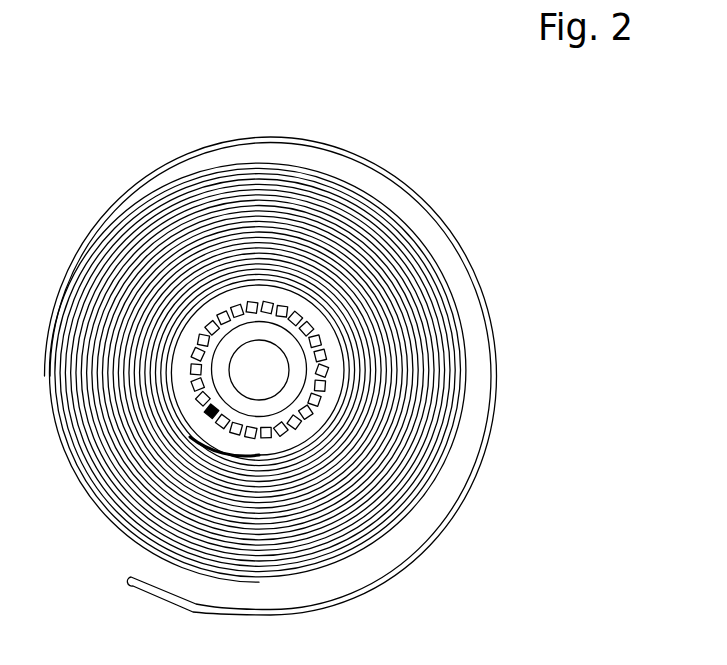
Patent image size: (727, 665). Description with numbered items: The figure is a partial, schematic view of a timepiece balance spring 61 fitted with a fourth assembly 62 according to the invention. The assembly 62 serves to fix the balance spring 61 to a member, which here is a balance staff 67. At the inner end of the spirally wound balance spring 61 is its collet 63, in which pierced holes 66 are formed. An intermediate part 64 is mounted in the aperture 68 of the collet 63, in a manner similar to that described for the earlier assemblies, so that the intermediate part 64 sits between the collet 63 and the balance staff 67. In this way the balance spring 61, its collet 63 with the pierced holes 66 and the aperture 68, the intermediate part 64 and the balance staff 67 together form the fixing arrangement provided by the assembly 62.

The balance spring 61 is at (524, 164).
The assembly 62 is at (502, 287).
The collet 63 is at (192, 332).
The intermediate part 64 is at (300, 343).
The pierced holes 66 is at (330, 402).
The balance staff 67 is at (265, 352).
The aperture 68 is at (211, 412).